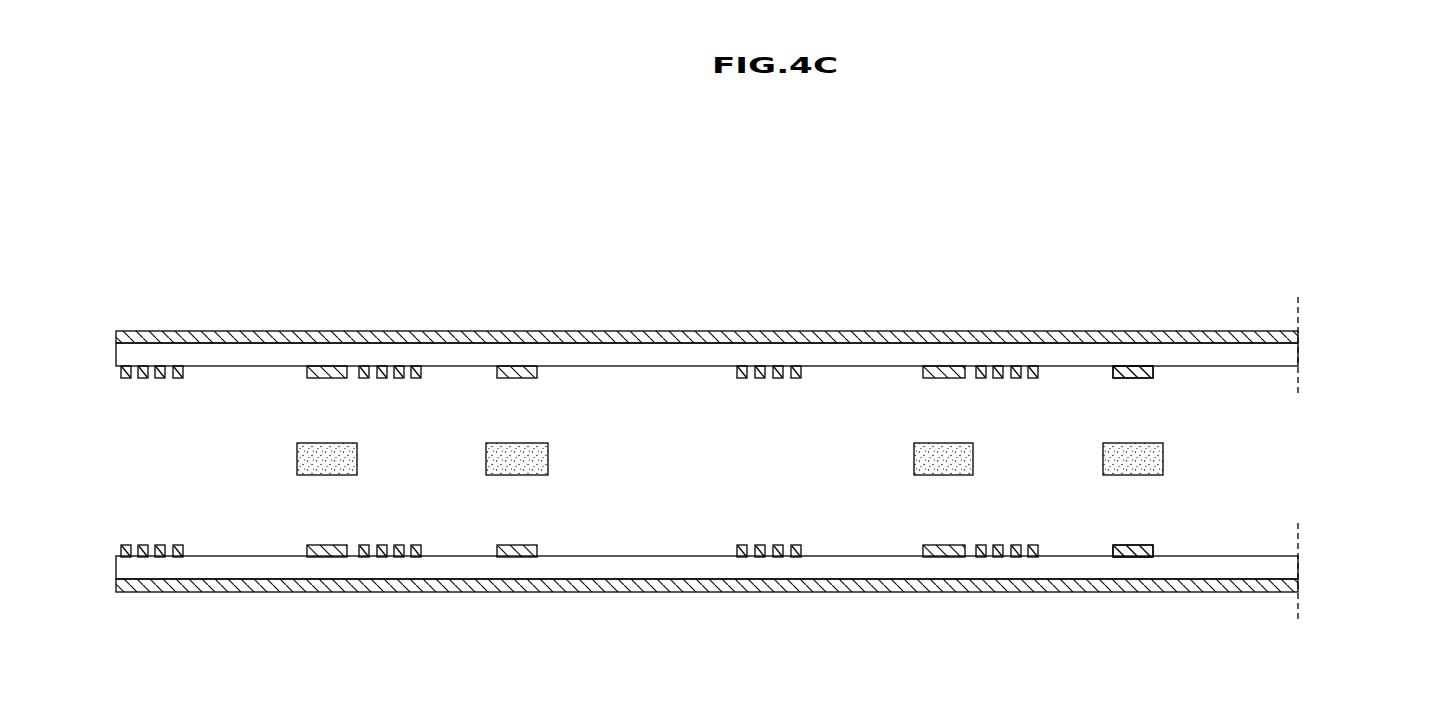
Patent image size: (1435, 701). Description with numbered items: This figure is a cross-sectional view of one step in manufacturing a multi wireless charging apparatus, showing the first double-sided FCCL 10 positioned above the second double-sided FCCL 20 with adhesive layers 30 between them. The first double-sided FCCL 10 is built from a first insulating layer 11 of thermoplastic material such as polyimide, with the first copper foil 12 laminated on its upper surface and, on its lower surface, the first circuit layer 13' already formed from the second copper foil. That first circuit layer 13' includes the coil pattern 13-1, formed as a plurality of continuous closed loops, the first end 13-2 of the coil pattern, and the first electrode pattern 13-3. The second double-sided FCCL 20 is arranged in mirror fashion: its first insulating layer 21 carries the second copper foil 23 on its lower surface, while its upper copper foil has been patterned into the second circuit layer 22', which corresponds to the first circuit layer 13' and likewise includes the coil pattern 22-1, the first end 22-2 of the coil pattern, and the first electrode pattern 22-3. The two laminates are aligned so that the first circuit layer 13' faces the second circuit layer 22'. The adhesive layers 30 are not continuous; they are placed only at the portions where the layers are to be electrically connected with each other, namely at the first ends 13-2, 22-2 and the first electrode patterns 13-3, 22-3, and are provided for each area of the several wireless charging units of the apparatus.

The first double-sided FCCL 10 is at (768, 358).
The first insulating layer 11 is at (1278, 354).
The first copper foil 12 is at (1288, 339).
The first circuit layer 13' is at (746, 380).
The coil pattern 13-1 is at (742, 378).
The first end of the coil pattern 13-2 is at (945, 378).
The first electrode pattern 13-3 is at (1130, 378).
The second double-sided FCCL 20 is at (767, 561).
The first insulating layer 21 is at (1280, 566).
The second circuit layer 22' is at (746, 542).
The coil pattern 22-1 is at (770, 523).
The first end of the coil pattern 22-2 is at (947, 545).
The first electrode pattern 22-3 is at (1131, 545).
The second copper foil 23 is at (1290, 583).
The adhesive layer 30 is at (1148, 459).